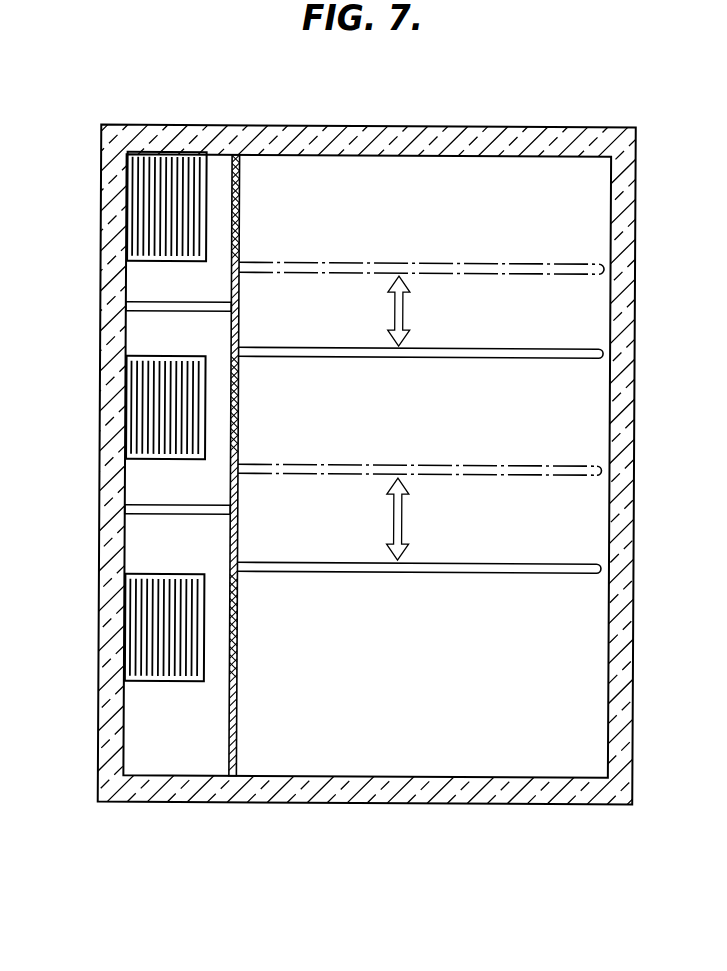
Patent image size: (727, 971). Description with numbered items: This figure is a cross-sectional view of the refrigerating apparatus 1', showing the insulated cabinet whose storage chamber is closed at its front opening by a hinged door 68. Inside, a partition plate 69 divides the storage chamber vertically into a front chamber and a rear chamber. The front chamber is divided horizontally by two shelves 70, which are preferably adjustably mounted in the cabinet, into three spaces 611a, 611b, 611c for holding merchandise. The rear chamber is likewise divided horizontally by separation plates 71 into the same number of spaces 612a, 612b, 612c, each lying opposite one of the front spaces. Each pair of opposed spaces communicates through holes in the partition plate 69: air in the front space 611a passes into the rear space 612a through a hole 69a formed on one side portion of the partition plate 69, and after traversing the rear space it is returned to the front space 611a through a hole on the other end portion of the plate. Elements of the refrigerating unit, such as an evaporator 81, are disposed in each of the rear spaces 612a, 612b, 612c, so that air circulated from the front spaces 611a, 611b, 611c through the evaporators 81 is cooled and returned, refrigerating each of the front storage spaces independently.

The refrigerating apparatus 1' is at (367, 491).
The hinged door 68 is at (624, 402).
The partition plate 69 is at (238, 710).
The hole 69a is at (238, 634).
The shelf 70 is at (556, 574).
The separation plate 71 is at (165, 506).
The evaporator 81 is at (130, 628).
The space 611a is at (428, 228).
The space 611b is at (422, 432).
The space 611c is at (417, 670).
The space 612a is at (130, 273).
The space 612b is at (133, 478).
The space 612c is at (132, 718).